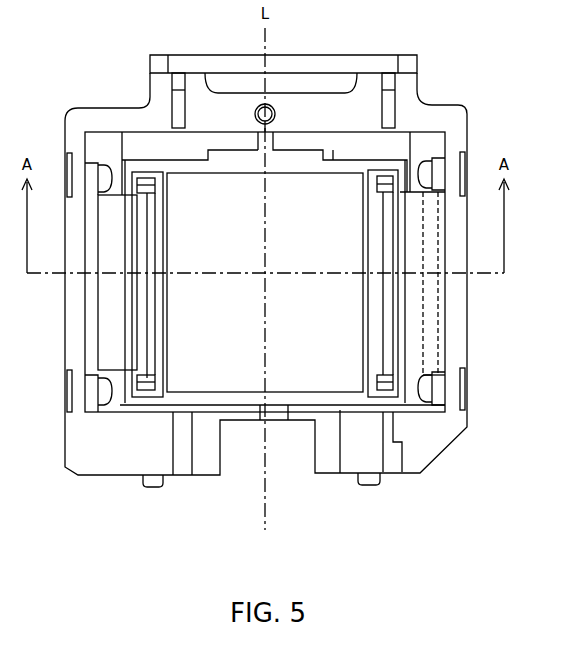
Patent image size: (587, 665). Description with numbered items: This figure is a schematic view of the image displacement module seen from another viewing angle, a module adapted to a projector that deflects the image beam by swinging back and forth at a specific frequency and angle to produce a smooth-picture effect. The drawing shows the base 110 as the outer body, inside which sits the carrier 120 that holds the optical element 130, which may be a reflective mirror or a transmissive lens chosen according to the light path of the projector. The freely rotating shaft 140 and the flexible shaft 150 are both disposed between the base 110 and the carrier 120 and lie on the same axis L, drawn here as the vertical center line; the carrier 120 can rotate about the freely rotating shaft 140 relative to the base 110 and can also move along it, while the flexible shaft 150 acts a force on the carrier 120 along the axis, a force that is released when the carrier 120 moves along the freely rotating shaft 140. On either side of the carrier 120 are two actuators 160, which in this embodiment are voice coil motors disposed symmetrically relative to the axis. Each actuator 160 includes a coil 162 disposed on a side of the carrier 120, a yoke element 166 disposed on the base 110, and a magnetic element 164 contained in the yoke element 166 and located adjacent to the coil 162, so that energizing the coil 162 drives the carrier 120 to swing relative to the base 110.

The base 110 is at (437, 455).
The carrier 120 is at (342, 397).
The optical element 130 is at (250, 377).
The freely rotating shaft 140 is at (285, 412).
The flexible shaft 150 is at (273, 140).
The actuator 160 is at (474, 297).
The coil 162 is at (400, 393).
The magnetic element 164 is at (442, 362).
The yoke element 166 is at (455, 283).